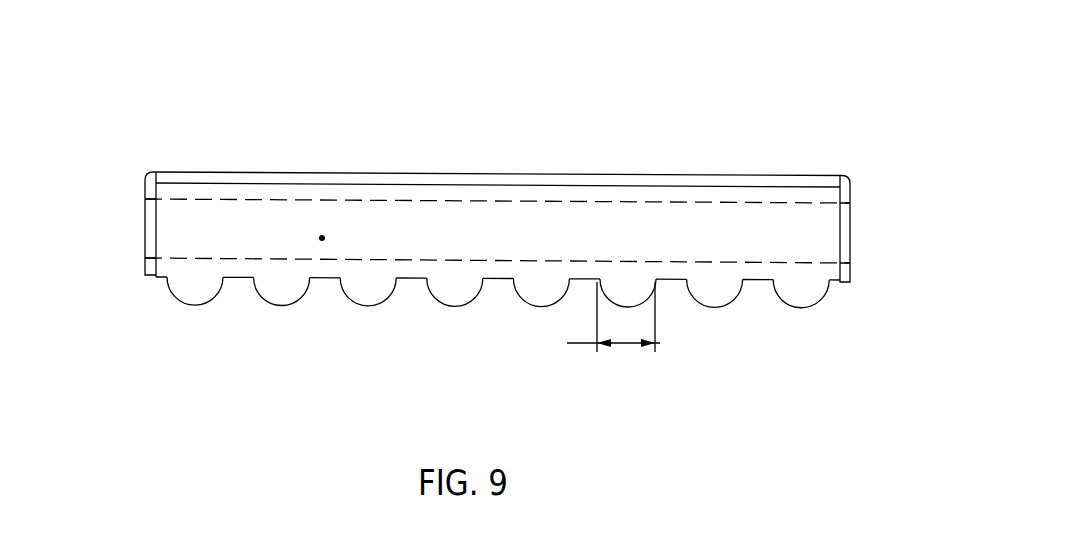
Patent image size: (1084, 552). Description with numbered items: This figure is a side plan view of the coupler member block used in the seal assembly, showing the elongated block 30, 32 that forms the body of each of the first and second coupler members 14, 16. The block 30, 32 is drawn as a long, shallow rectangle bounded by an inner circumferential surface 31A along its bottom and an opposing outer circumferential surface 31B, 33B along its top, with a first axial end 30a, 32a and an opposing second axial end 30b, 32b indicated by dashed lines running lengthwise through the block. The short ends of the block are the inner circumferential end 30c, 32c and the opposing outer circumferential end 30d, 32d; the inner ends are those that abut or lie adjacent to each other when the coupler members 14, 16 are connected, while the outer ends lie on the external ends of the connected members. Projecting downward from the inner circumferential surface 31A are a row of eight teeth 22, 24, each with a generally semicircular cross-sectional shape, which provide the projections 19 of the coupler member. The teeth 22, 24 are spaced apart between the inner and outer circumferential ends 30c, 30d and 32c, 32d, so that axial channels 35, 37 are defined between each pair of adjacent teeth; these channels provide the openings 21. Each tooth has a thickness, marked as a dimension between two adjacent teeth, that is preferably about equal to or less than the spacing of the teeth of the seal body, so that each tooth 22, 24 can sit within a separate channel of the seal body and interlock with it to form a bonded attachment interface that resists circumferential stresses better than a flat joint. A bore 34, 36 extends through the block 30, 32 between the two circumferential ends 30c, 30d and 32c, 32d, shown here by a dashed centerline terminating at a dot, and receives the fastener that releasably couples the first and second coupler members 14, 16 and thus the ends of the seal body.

The first coupler member 14 is at (502, 196).
The second coupler member 16 is at (316, 52).
The projections 19 is at (280, 303).
The openings 21 is at (240, 279).
The teeth 22 is at (498, 329).
The teeth 24 is at (197, 297).
The elongated block 30 is at (502, 237).
The elongated block 32 is at (513, 168).
The first axial end 30a is at (691, 150).
The first axial end 32a is at (645, 190).
The second axial end 30b is at (498, 161).
The second axial end 32b is at (723, 195).
The inner circumferential end 30c is at (99, 224).
The inner circumferential end 32c is at (143, 212).
The outer circumferential end 30d is at (901, 229).
The outer circumferential end 32d is at (851, 223).
The inner circumferential surface 31A is at (497, 278).
The outer circumferential surface 31B is at (405, 173).
The outer circumferential surface 33B is at (497, 234).
The bore 34 is at (318, 296).
The bore 36 is at (322, 244).
The axial channels 35 is at (557, 309).
The axial channels 37 is at (412, 277).